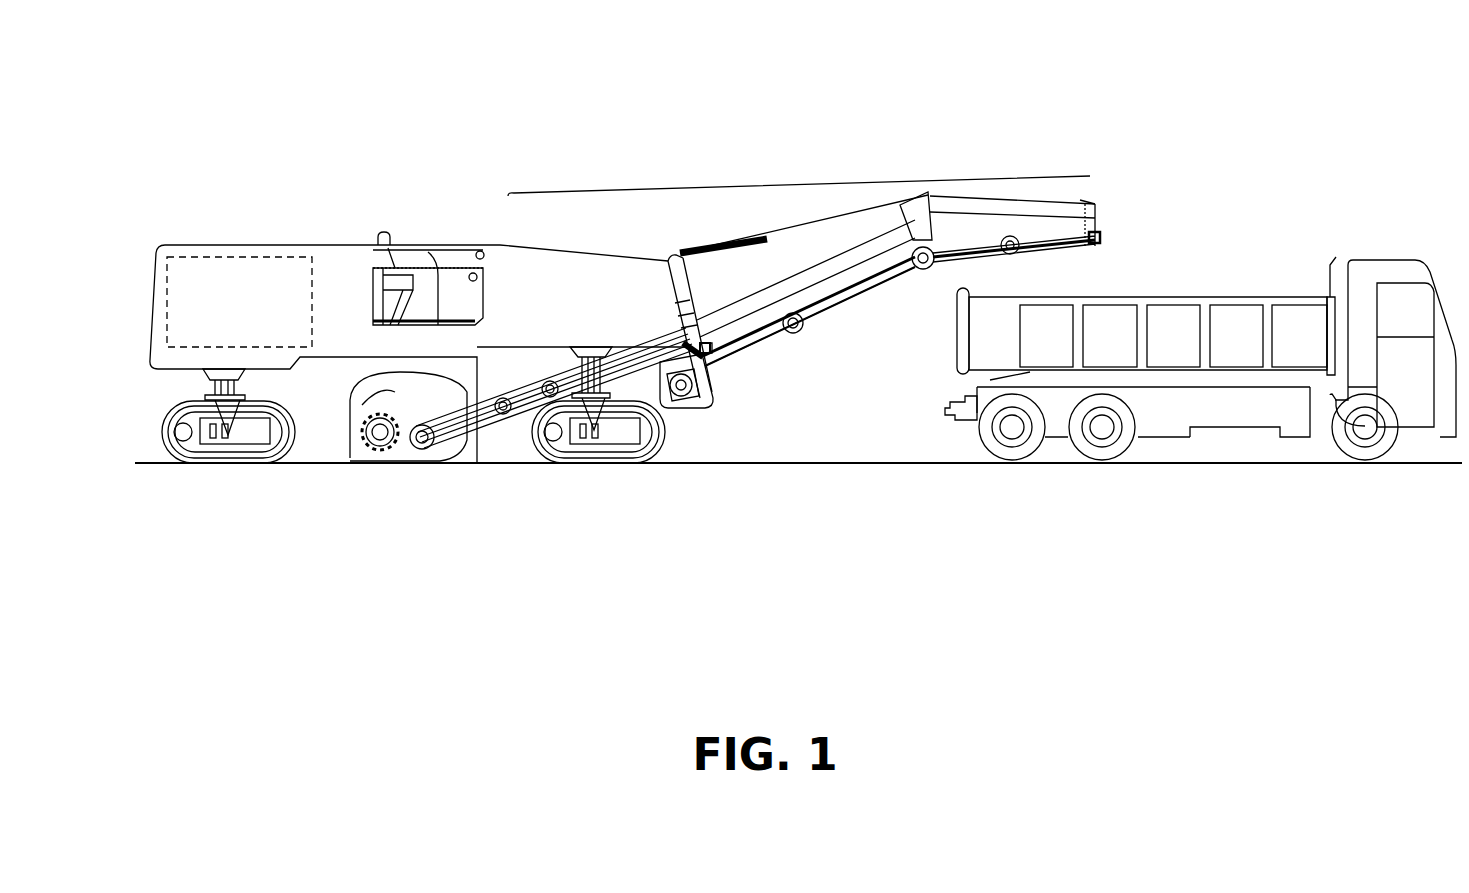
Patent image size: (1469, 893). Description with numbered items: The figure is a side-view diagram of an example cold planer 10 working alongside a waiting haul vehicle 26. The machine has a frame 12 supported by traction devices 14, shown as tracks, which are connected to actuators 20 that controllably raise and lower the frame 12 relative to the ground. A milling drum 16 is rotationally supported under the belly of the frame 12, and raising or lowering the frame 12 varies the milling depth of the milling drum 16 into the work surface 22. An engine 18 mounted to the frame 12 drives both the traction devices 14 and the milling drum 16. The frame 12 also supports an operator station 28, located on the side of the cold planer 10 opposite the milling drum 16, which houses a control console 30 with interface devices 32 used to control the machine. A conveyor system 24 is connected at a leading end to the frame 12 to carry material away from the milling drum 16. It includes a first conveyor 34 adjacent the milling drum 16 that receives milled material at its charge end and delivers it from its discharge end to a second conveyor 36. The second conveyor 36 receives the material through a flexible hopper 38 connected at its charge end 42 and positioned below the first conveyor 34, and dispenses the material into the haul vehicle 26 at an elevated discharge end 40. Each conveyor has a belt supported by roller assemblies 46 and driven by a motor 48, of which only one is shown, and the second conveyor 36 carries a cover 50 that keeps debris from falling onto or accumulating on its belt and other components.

The cold planer 10 is at (678, 100).
The frame 12 is at (505, 245).
The traction devices 14 is at (296, 463).
The milling drum 16 is at (398, 455).
The engine 18 is at (190, 256).
The actuators 20 is at (205, 400).
The work surface 22 is at (775, 468).
The conveyor system 24 is at (795, 178).
The haul vehicle 26 is at (1208, 230).
The operator station 28 is at (413, 187).
The control console 30 is at (448, 210).
The interface devices 32 is at (428, 250).
The first conveyor 34 is at (560, 431).
The second conveyor 36 is at (938, 278).
The flexible hopper 38 is at (670, 420).
The discharge end 40 is at (1110, 215).
The charge end 42 is at (727, 378).
The roller assemblies 46 is at (800, 325).
The motor 48 is at (1101, 241).
The cover 50 is at (1092, 195).